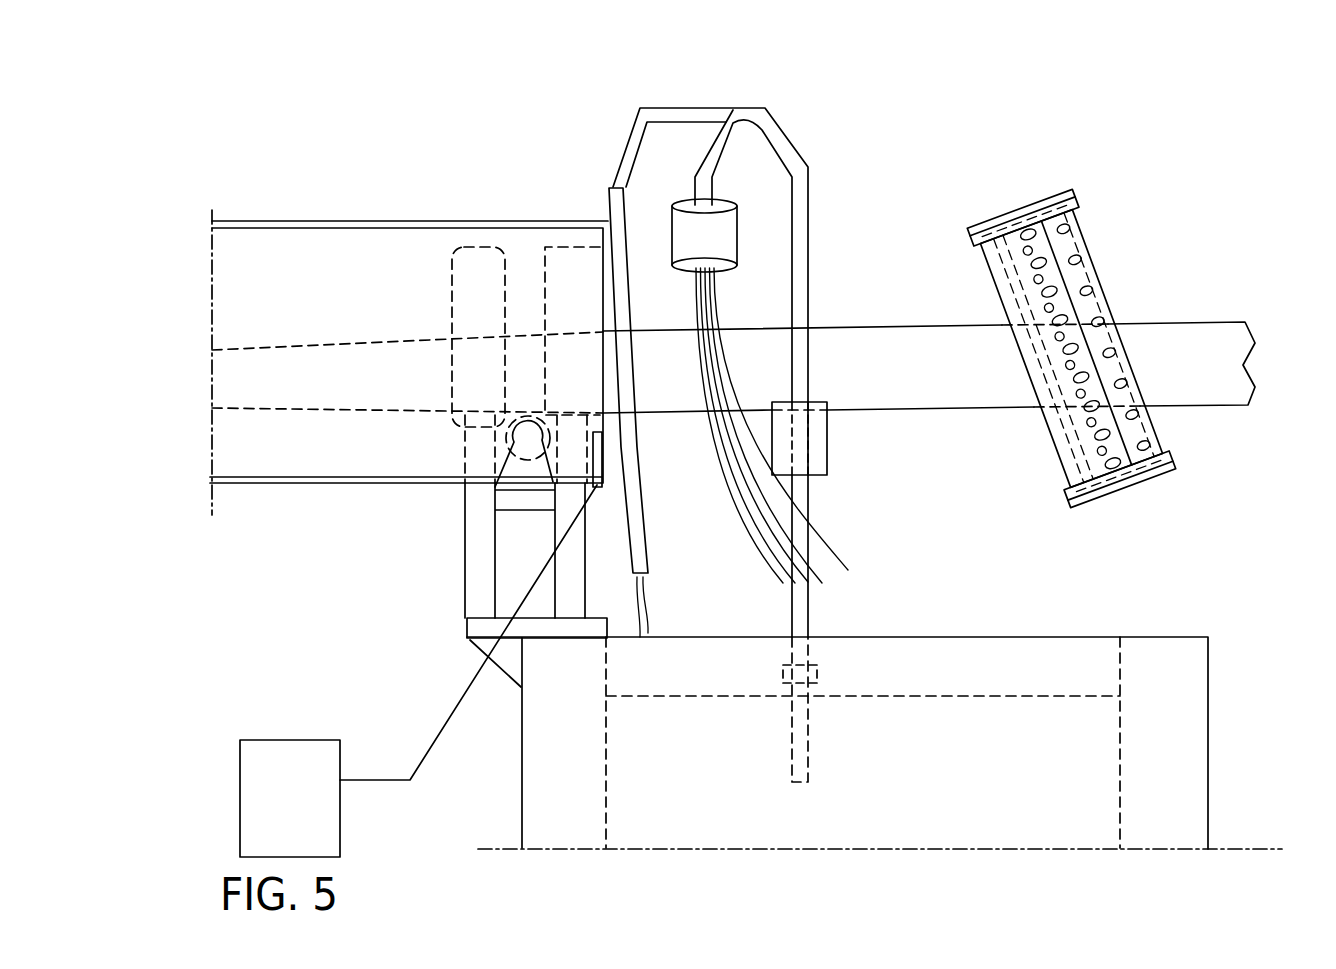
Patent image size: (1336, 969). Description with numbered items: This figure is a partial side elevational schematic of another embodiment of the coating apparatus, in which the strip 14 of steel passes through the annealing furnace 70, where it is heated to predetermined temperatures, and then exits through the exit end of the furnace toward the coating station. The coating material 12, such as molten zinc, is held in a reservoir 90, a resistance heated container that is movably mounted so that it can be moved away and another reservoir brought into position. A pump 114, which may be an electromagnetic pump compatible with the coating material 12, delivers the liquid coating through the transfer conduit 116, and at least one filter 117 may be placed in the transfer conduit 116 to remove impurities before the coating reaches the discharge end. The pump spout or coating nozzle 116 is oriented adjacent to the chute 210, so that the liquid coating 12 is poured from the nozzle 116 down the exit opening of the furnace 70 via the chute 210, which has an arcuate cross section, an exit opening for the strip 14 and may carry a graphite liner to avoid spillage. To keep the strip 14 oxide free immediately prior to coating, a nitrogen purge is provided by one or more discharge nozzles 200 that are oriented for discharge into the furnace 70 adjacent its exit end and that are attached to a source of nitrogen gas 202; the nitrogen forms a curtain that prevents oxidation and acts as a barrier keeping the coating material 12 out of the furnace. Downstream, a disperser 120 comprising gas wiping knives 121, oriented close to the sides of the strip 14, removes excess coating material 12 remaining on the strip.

The annealing furnace 70 is at (352, 207).
The coating material 12 is at (615, 177).
The chute 210 is at (607, 207).
The transfer conduit 116 is at (682, 200).
The pump 114 is at (826, 438).
The filter 117 is at (815, 677).
The disperser 120 is at (1093, 273).
The gas wiping knives 121 is at (1127, 508).
The strip 14 is at (1197, 321).
The reservoir 90 is at (1218, 716).
The discharge nozzles 200 is at (597, 485).
The source of nitrogen gas 202 is at (312, 818).